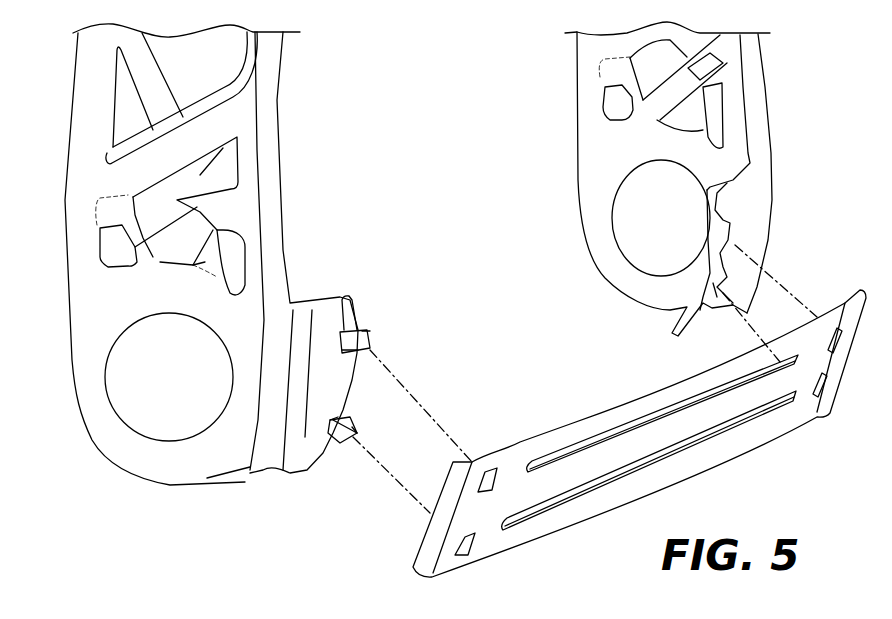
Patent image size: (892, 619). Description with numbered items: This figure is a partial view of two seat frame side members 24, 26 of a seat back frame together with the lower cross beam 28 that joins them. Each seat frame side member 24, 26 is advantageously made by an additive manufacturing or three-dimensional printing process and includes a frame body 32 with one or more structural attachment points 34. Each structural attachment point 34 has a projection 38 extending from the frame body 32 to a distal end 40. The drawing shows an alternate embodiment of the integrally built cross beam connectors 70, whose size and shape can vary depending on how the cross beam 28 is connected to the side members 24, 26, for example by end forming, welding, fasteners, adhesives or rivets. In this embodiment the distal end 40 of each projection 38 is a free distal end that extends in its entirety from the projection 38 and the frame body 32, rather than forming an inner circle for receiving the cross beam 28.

The seat frame side member 24 is at (757, 80).
The seat frame side member 26 is at (83, 107).
The lower cross beam 28 is at (500, 540).
The frame body 32 is at (268, 108).
The structural attachment point 34 is at (365, 330).
The projection 38 is at (344, 330).
The distal end 40 is at (342, 345).
The cross beam connector 70 is at (370, 331).